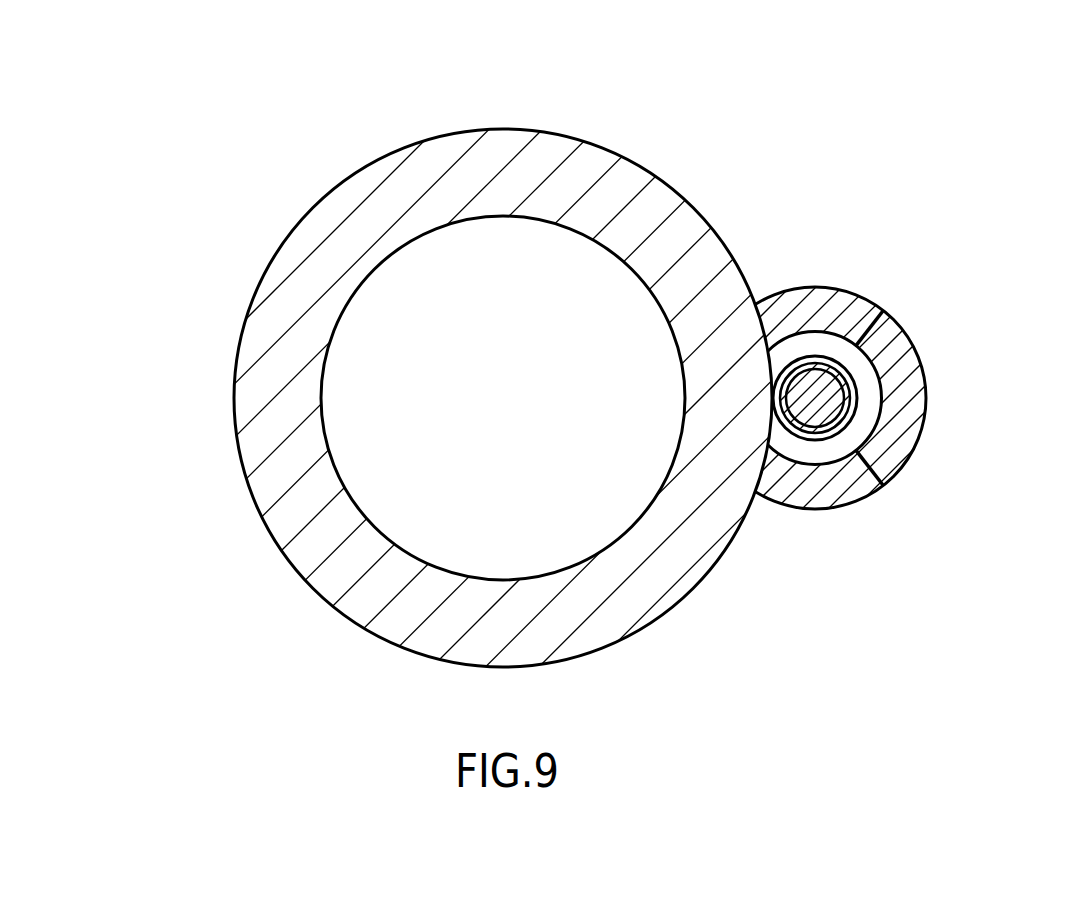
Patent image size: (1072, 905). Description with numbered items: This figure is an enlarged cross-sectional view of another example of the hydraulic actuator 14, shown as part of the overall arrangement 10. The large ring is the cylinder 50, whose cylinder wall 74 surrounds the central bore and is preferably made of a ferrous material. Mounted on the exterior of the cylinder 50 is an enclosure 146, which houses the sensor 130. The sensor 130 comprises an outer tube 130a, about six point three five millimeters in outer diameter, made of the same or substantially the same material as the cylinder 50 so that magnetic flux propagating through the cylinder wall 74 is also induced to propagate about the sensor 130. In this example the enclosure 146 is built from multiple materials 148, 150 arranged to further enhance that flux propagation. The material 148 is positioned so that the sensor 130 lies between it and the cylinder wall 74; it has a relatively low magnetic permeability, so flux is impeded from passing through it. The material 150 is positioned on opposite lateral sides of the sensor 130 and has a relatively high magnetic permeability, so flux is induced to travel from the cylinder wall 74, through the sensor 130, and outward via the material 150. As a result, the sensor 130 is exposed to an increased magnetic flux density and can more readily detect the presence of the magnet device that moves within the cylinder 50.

The assembly 10 is at (860, 110).
The actuator 14 is at (296, 226).
The cylinder wall 74 is at (435, 155).
The cylinder 50 is at (252, 502).
The enclosure 146 is at (830, 511).
The material 148 is at (915, 338).
The material 150 is at (853, 290).
The sensor 130 is at (868, 392).
The outer tube 130a is at (853, 415).